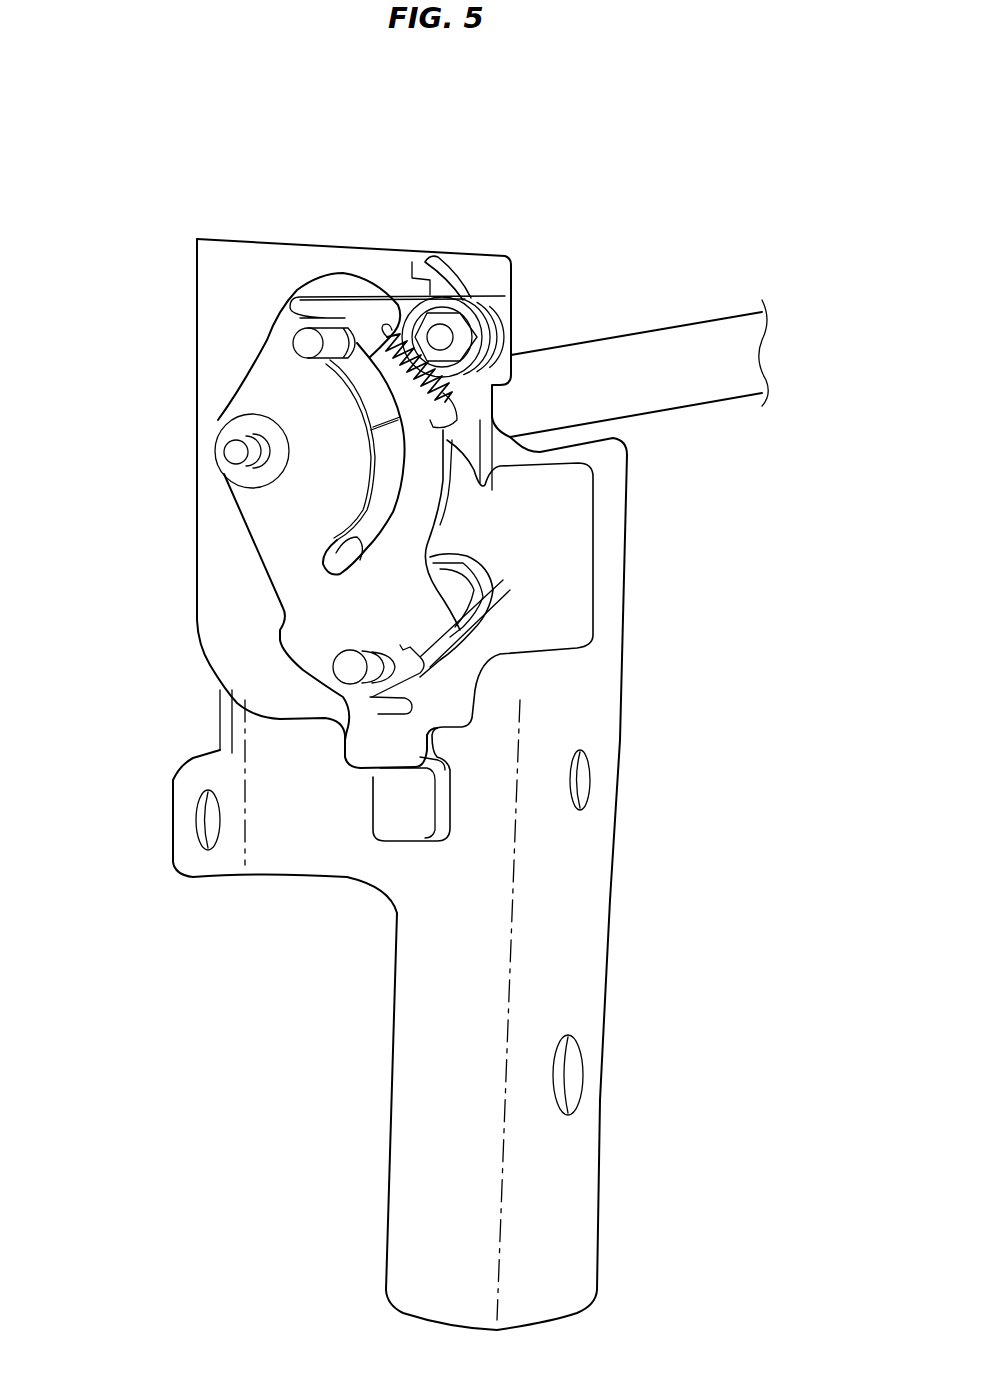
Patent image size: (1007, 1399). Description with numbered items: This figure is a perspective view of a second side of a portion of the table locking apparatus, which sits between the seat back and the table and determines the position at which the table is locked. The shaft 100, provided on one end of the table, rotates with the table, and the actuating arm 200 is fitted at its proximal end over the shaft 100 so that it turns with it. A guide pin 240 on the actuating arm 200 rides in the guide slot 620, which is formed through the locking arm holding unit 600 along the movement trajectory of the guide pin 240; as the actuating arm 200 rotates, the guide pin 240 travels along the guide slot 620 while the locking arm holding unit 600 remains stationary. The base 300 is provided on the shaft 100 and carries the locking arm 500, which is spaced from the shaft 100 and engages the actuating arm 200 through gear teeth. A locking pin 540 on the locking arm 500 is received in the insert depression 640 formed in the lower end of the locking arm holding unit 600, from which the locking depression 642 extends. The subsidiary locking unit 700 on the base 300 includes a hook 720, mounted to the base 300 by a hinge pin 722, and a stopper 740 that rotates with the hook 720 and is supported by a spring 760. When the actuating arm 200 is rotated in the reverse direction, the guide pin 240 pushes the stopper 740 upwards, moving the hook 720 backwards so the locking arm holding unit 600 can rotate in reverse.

The shaft 100 is at (700, 325).
The actuating arm 200 is at (370, 382).
The guide pin 240 is at (307, 343).
The base 300 is at (563, 693).
The locking arm 500 is at (453, 587).
The locking pin 540 is at (333, 663).
The locking arm holding unit 600 is at (277, 517).
The guide slot 620 is at (357, 537).
The insert depression 640 is at (375, 710).
The locking depression 642 is at (400, 653).
The subsidiary locking unit 700 is at (512, 240).
The hook 720 is at (437, 255).
The hinge pin 722 is at (440, 337).
The stopper 740 is at (340, 313).
The spring 760 is at (400, 330).